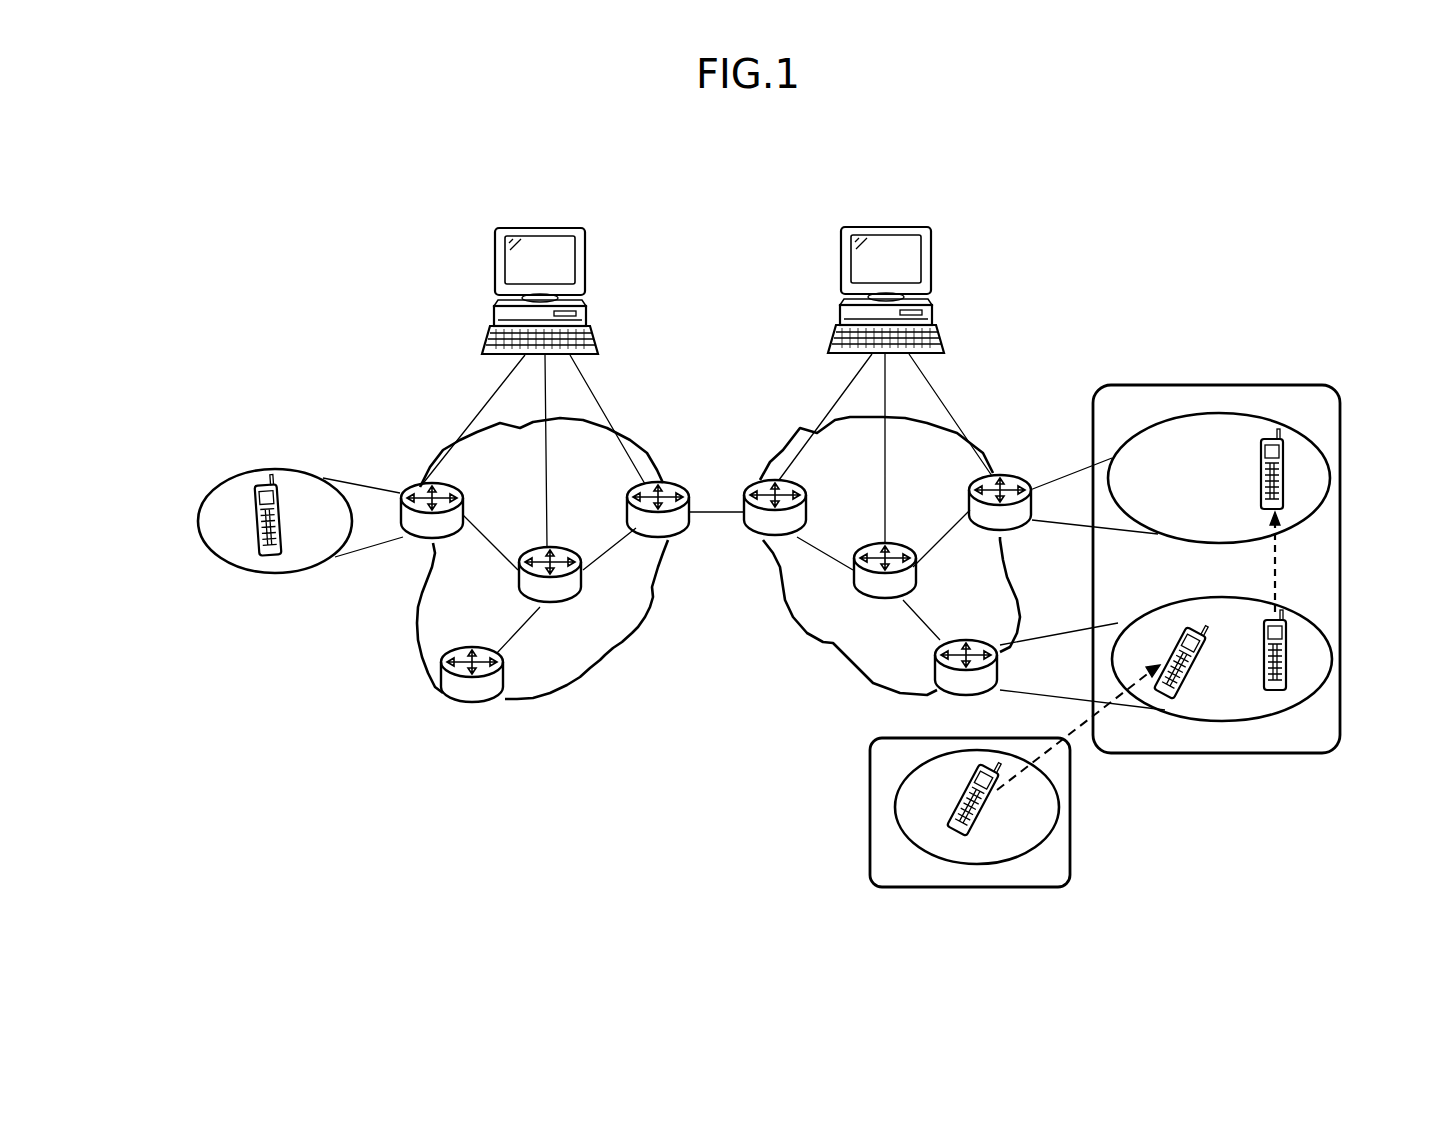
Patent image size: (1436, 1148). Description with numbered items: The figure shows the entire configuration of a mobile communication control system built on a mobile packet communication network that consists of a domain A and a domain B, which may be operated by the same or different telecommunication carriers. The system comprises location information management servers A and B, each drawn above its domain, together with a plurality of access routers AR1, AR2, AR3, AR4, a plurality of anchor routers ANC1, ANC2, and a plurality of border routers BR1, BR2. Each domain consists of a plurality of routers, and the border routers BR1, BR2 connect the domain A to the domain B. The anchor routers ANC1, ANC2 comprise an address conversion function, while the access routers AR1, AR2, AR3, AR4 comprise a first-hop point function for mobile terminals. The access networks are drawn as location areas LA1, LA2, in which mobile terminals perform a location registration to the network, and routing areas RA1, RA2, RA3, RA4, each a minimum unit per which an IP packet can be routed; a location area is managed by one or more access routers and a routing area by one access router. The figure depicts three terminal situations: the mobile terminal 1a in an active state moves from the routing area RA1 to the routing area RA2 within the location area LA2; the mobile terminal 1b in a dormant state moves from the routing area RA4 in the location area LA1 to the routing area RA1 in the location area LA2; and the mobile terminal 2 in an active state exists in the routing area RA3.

The mobile terminal 1a is at (1272, 437).
The mobile terminal 1b is at (1166, 692).
The mobile terminal 2 is at (262, 470).
The access router AR1 is at (965, 698).
The access router AR2 is at (1011, 479).
The access router AR3 is at (419, 483).
The access router AR4 is at (470, 698).
The border router BR1 is at (753, 482).
The border router BR2 is at (676, 482).
The anchor router ANC1 is at (837, 643).
The anchor router ANC2 is at (557, 603).
The routing area RA#1 RA1 is at (1178, 596).
The routing area RA#2 RA2 is at (1160, 416).
The routing area RA#3 RA3 is at (275, 575).
The routing area RA#4 RA4 is at (930, 857).
The location area LA#1 LA1 is at (870, 806).
The location area LA#2 LA2 is at (1106, 384).